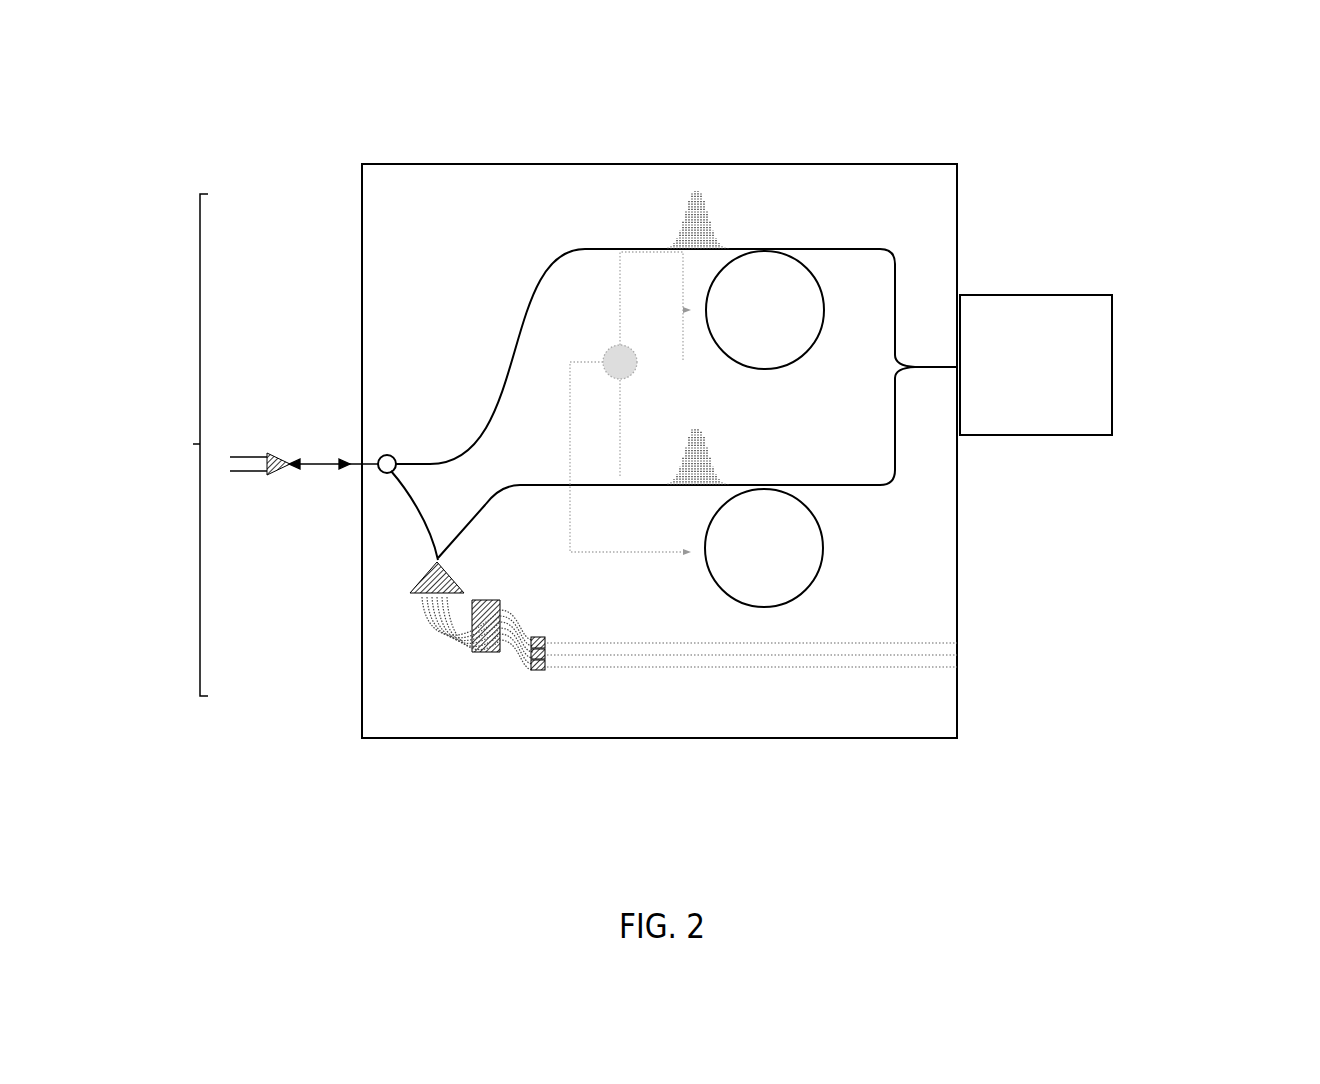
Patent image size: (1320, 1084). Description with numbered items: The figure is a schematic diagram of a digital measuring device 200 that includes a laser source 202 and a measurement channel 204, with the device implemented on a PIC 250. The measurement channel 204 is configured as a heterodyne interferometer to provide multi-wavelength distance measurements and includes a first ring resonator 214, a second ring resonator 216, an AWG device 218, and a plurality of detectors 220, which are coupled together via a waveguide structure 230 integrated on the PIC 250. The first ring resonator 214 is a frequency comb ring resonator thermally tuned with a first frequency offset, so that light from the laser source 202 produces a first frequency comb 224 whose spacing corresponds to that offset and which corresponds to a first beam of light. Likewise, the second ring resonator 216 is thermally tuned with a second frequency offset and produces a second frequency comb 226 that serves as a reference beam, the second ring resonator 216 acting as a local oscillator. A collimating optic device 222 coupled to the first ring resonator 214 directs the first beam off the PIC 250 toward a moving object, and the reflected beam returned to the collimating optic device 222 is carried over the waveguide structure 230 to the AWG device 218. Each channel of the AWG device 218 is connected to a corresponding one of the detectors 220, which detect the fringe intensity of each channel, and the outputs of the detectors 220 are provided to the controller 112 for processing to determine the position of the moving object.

The digital measuring device 200 is at (1152, 145).
The laser source 202 is at (1036, 365).
The measurement channel 204 is at (167, 445).
The controller 112 is at (972, 651).
The collimating optic device 222 is at (304, 450).
The waveguide structure 230 is at (418, 529).
The PIC 250 is at (568, 163).
The first frequency comb 224 is at (713, 217).
The second frequency comb 226 is at (713, 455).
The first ring resonator 214 is at (765, 310).
The second ring resonator 216 is at (764, 548).
The AWG device 218 is at (458, 616).
The detectors 220 is at (578, 663).